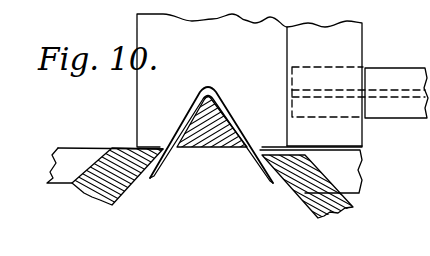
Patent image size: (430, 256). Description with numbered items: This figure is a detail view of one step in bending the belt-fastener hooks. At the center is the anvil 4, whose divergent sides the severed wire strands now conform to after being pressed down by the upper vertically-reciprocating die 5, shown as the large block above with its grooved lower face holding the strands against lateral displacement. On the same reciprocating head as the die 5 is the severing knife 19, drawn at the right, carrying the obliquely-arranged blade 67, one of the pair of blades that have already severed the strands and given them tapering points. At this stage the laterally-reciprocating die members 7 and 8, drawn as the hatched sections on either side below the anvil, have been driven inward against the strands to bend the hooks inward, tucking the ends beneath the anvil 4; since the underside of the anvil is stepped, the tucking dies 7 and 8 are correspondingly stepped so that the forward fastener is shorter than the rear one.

The upper vertically-reciprocating die 5 is at (249, 80).
The severing knife 19 is at (362, 140).
The blade 67 is at (357, 78).
The anvil 4 is at (208, 148).
The laterally-reciprocating die member 7 is at (99, 202).
The laterally-reciprocating die member 8 is at (346, 212).